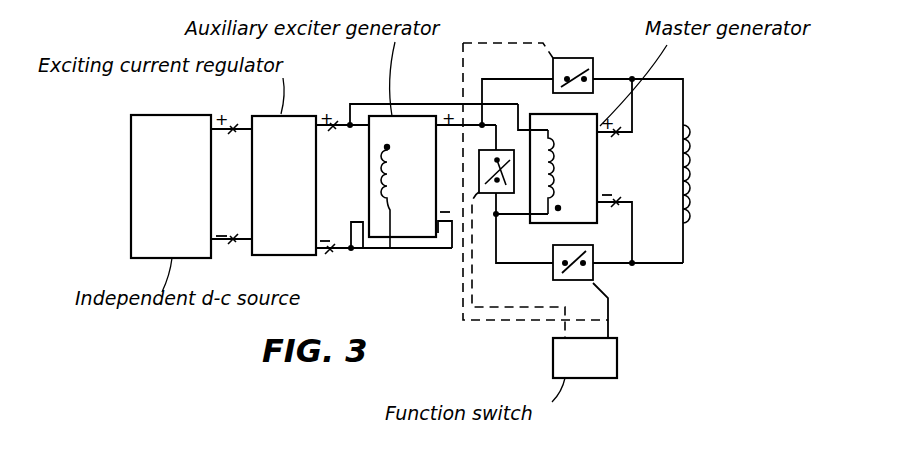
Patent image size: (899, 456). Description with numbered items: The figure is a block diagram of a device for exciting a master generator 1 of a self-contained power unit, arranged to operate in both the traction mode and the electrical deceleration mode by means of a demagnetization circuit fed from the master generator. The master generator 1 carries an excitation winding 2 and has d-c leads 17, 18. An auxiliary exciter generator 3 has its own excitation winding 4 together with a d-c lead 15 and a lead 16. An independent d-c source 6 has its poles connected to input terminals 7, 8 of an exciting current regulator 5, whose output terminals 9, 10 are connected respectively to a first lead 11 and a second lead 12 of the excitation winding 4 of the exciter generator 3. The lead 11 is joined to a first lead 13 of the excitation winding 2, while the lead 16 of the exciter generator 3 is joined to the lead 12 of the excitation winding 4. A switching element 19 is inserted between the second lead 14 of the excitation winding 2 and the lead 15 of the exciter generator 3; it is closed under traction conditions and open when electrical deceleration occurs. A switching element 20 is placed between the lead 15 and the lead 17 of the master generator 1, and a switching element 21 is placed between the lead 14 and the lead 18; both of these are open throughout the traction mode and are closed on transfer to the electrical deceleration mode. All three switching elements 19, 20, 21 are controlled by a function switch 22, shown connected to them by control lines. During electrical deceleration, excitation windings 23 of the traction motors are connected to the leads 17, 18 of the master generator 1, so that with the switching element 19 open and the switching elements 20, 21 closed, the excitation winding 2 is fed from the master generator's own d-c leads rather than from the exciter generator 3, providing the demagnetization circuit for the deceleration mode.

The master generator 1 is at (563, 168).
The excitation winding 2 is at (572, 122).
The auxiliary exciter generator 3 is at (402, 176).
The excitation winding 4 is at (391, 250).
The exciting current regulator 5 is at (284, 185).
The independent d-c source 6 is at (171, 186).
The input terminal 7 is at (233, 129).
The input terminal 8 is at (232, 242).
The output terminal 9 is at (333, 126).
The output terminal 10 is at (329, 251).
The first lead 11 is at (358, 128).
The second lead 12 is at (363, 250).
The first lead 13 is at (522, 116).
The second lead 14 is at (518, 216).
The d-c lead 15 is at (441, 104).
The lead 16 is at (440, 250).
The d-c lead 17 is at (618, 134).
The d-c lead 18 is at (618, 202).
The switching element 19 is at (490, 194).
The switching element 20 is at (587, 58).
The switching element 21 is at (552, 273).
The function switch 22 is at (585, 358).
The excitation windings of traction motors 23 is at (693, 140).